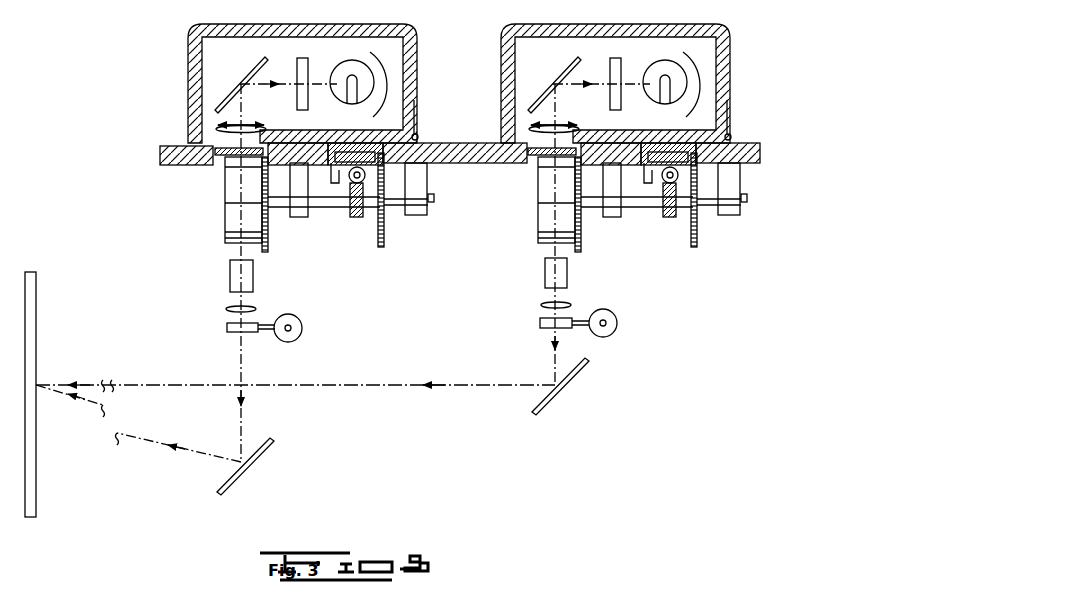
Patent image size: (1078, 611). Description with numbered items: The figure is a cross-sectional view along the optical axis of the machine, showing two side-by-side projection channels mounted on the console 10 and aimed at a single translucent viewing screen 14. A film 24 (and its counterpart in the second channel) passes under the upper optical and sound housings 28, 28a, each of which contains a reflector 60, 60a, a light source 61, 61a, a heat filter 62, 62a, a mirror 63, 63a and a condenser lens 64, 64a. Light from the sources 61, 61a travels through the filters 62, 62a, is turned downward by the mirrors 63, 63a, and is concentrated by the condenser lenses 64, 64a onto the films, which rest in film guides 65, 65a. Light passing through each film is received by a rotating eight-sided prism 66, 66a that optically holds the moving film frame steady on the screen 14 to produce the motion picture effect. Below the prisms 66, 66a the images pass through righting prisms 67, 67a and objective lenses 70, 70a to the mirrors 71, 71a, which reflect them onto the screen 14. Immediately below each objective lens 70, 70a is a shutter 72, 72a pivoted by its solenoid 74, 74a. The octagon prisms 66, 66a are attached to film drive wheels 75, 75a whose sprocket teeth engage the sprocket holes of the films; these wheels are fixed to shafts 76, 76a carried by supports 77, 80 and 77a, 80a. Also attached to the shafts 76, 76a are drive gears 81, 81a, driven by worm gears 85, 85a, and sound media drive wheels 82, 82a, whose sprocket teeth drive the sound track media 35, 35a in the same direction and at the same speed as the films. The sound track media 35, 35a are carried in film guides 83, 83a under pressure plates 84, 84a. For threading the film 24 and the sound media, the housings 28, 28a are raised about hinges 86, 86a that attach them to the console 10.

The console 10 is at (172, 147).
The translucent viewing screen 14 is at (37, 312).
The film 24 is at (263, 146).
The upper optical and sound housing 28 is at (417, 36).
The upper optical and sound housing 28a is at (730, 36).
The sound track media 35 is at (360, 143).
The sound track media 35a is at (673, 143).
The reflector 60 is at (372, 56).
The reflector 60a is at (685, 56).
The light source 61 is at (340, 63).
The light source 61a is at (653, 63).
The heat filter 62 is at (299, 60).
The heat filter 62a is at (612, 60).
The mirror 63 is at (256, 62).
The mirror 63a is at (569, 62).
The condenser lens 64 is at (260, 122).
The condenser lens 64a is at (573, 122).
The film guide 65 is at (224, 164).
The film guide 65a is at (537, 164).
The rotating eight-sided prism 66 is at (225, 240).
The rotating eight-sided prism 66a is at (538, 240).
The righting prism 67 is at (253, 282).
The righting prism 67a is at (567, 280).
The objective lens 70 is at (255, 307).
The objective lens 70a is at (570, 303).
The mirror 71 is at (260, 449).
The mirror 71a is at (575, 370).
The shutter 72 is at (226, 328).
The shutter 72a is at (539, 323).
The solenoid 74 is at (300, 320).
The solenoid 74a is at (615, 315).
The film drive wheel 75 is at (270, 238).
The film drive wheel 75a is at (583, 238).
The shaft 76 is at (431, 202).
The shaft 76a is at (744, 202).
The support 77 is at (296, 217).
The support 77a is at (609, 217).
The support 80 is at (420, 215).
The support 80a is at (733, 215).
The drive gear 81 is at (358, 218).
The drive gear 81a is at (671, 218).
The sound media drive wheel 82 is at (385, 222).
The sound media drive wheel 82a is at (698, 222).
The film guide 83 is at (332, 172).
The film guide 83a is at (645, 172).
The pressure plate 84 is at (330, 143).
The pressure plate 84a is at (643, 143).
The worm gear 85 is at (348, 200).
The worm gear 85a is at (661, 200).
The hinge 86 is at (418, 133).
The hinge 86a is at (731, 133).